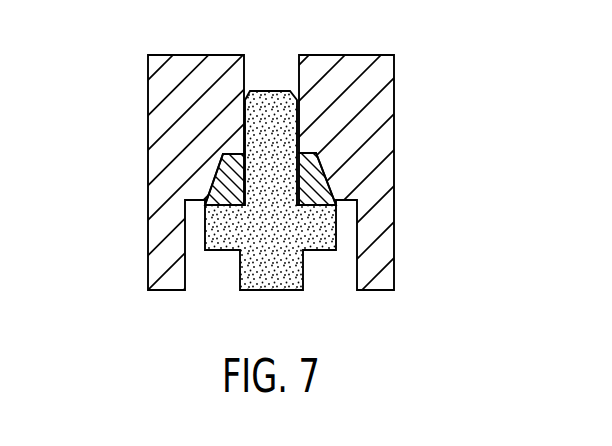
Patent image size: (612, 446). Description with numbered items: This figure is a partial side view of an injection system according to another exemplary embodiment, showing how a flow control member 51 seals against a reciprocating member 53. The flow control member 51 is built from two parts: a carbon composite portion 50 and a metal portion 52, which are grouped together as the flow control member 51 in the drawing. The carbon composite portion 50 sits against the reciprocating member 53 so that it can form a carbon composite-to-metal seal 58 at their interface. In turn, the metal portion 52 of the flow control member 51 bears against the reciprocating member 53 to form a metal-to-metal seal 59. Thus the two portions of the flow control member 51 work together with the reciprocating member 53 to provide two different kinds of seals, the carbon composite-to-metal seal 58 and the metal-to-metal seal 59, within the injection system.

The carbon composite portion 50 is at (230, 190).
The flow control member 51 is at (187, 190).
The metal portion 52 is at (227, 238).
The reciprocating member 53 is at (185, 125).
The carbon composite-to-metal seal 58 is at (330, 185).
The metal-to-metal seal 59 is at (301, 141).